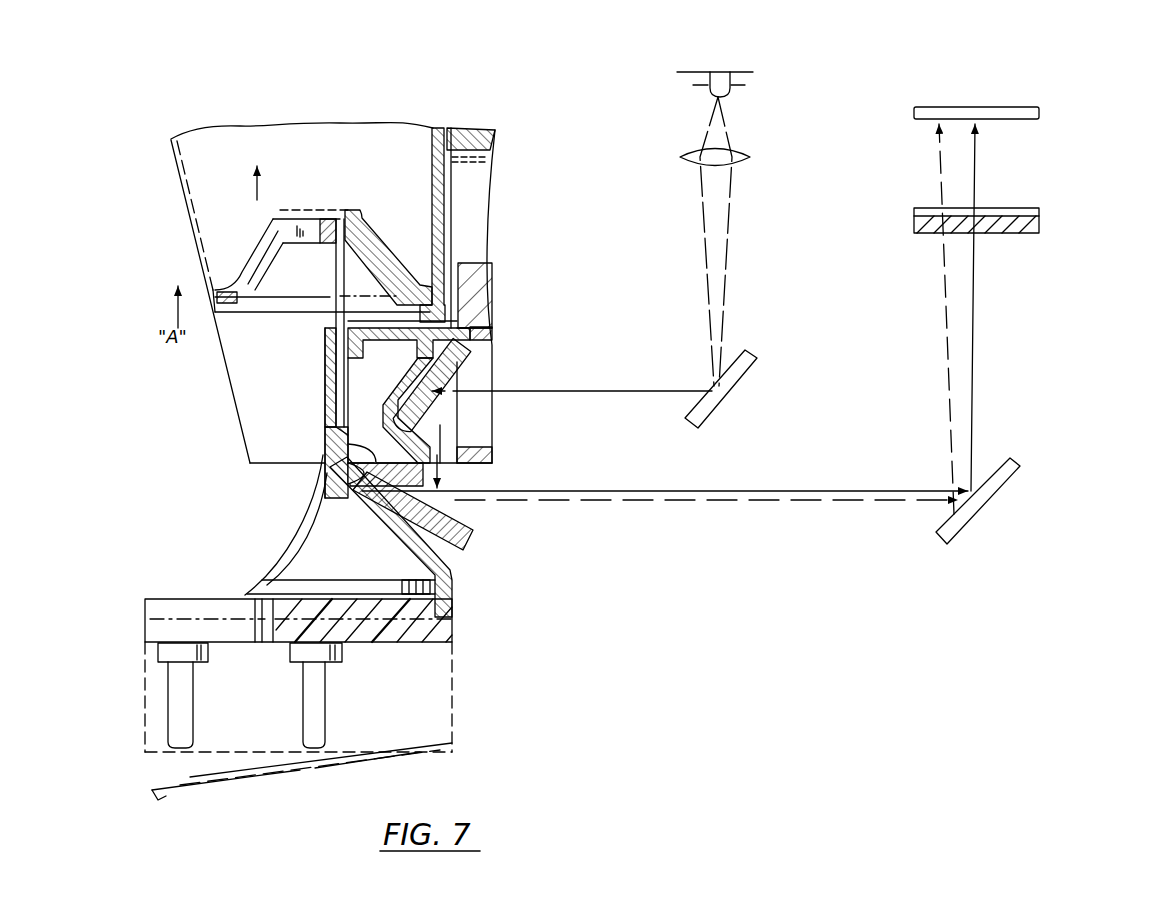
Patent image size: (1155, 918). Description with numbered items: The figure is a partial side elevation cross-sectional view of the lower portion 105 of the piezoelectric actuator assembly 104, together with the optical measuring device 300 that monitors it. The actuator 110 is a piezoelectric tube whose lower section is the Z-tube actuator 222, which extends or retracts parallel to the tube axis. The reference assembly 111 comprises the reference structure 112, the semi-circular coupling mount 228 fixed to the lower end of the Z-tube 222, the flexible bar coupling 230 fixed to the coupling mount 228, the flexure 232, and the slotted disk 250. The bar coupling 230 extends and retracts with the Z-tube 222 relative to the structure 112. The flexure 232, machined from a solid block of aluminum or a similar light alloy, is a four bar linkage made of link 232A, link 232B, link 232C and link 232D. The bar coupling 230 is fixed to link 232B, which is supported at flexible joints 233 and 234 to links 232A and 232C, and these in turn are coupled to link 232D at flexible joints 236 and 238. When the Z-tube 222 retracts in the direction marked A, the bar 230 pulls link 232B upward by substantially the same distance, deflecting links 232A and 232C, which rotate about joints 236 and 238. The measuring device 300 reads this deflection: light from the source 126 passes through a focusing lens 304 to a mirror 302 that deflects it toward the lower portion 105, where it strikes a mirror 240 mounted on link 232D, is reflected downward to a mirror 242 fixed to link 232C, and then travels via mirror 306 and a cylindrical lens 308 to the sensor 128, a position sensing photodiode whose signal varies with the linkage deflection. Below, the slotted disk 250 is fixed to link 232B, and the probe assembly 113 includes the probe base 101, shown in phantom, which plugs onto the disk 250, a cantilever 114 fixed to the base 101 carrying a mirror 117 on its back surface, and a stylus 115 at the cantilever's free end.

The actuator assembly 104 is at (449, 37).
The actuator 110 is at (257, 121).
The Z-tube actuator 222 is at (440, 127).
The reference structure 112 is at (473, 132).
The reference assembly 111 is at (500, 178).
The coupling mount 228 is at (275, 232).
The flexible joint 233 is at (358, 330).
The flexible bar coupling 230 is at (327, 281).
The link 232A is at (430, 318).
The flexible joint 236 is at (455, 315).
The flexure 232 is at (470, 330).
The mirror 240 is at (470, 352).
The link 232D is at (383, 392).
The lower portion 105 is at (226, 414).
The link 232C is at (327, 438).
The link 232B is at (325, 457).
The flexible joint 234 is at (362, 490).
The mirror 242 is at (473, 525).
The flexible joint 238 is at (410, 483).
The slotted disk 250 is at (158, 612).
The probe base 101 is at (147, 673).
The probe assembly 113 is at (482, 742).
The mirror 117 is at (223, 774).
The cantilever 114 is at (348, 764).
The stylus 115 is at (167, 803).
The source 126 is at (730, 91).
The focusing lens 304 is at (748, 157).
The mirror 302 is at (753, 367).
The measuring device 300 is at (1022, 92).
The sensor 128 is at (1042, 113).
The cylindrical lens 308 is at (1040, 226).
The mirror 306 is at (1016, 468).